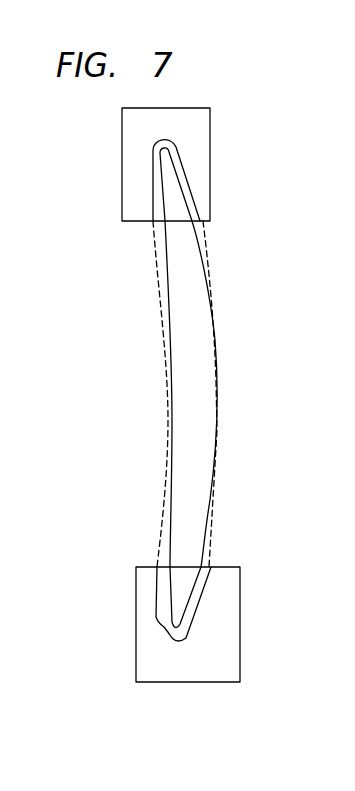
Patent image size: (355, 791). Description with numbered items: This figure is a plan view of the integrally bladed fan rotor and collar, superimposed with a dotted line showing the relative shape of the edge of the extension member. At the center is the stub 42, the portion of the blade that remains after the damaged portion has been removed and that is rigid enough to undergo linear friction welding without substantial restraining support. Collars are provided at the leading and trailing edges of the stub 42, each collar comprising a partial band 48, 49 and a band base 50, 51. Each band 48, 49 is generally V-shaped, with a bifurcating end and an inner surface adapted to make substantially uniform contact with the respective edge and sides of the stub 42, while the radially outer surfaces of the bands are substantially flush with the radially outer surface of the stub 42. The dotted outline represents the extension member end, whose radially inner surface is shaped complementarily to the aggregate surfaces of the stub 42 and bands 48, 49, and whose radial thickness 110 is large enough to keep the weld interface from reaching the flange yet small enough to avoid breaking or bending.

The stub portion 42 is at (197, 232).
The partial band 48 is at (153, 140).
The partial band 49 is at (165, 632).
The band base 50 is at (202, 108).
The band base 51 is at (205, 682).
The radial thickness 110 is at (212, 307).